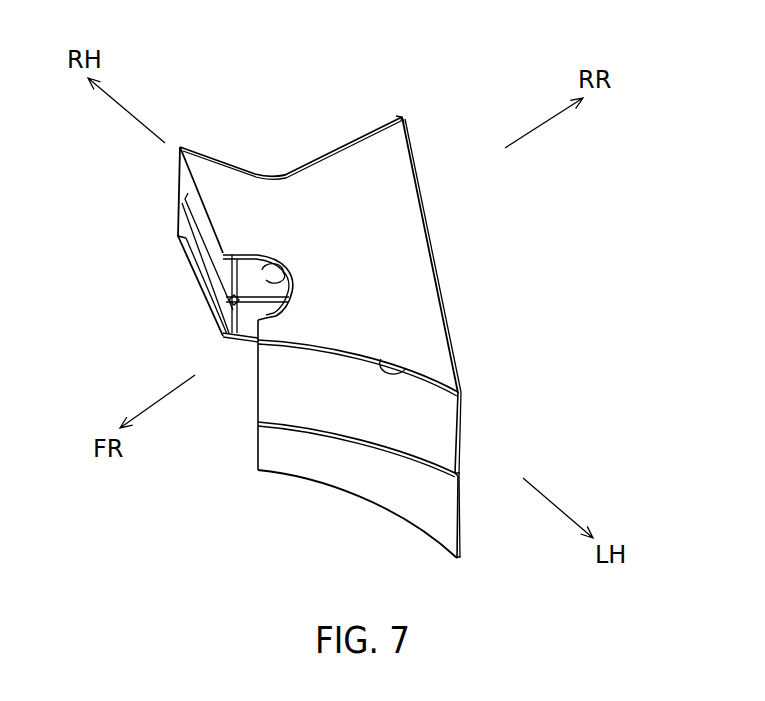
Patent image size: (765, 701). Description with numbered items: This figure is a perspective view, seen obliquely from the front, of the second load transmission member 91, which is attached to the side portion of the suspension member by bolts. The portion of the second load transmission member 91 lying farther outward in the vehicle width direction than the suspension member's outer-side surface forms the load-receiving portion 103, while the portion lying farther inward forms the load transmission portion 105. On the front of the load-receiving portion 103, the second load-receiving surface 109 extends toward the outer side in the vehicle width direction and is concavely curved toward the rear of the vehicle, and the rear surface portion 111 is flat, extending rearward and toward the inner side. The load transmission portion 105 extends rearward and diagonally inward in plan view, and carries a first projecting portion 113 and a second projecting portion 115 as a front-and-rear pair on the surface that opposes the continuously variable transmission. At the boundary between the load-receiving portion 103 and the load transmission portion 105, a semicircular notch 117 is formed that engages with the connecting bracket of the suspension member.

The second load transmission member 91 is at (343, 285).
The load-receiving portion 103 is at (382, 378).
The load transmission portion 105 is at (325, 173).
The second load-receiving surface 109 is at (360, 482).
The rear surface portion 111 is at (435, 257).
The first projecting portion 113 is at (203, 167).
The second projecting portion 115 is at (405, 138).
The semicircular notch 117 is at (289, 265).